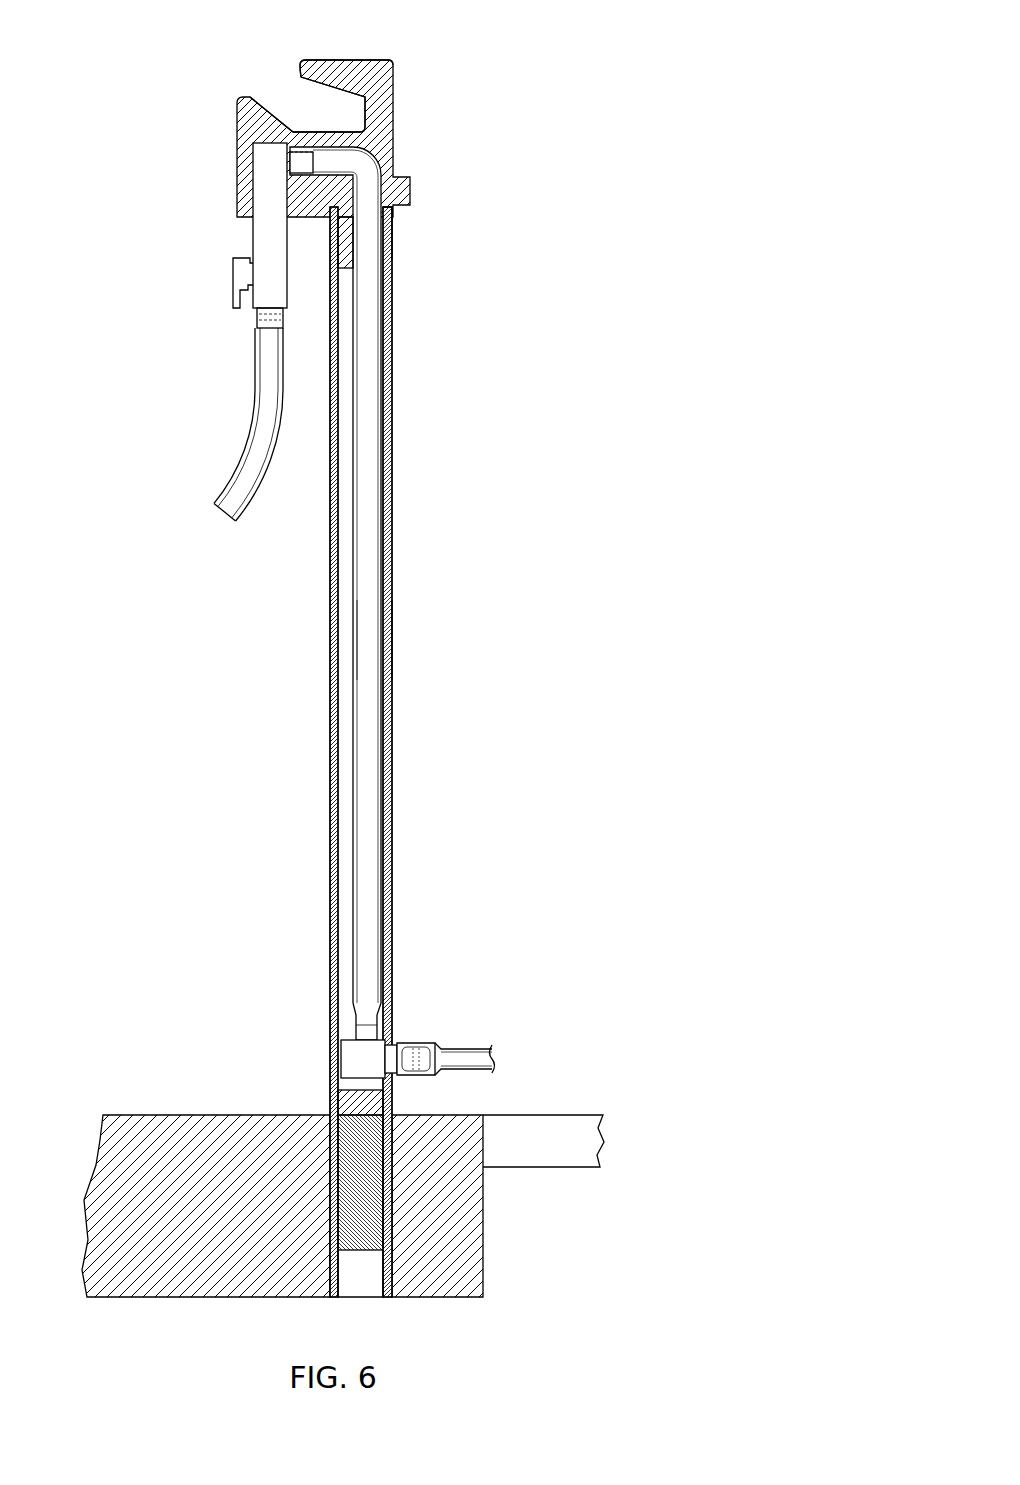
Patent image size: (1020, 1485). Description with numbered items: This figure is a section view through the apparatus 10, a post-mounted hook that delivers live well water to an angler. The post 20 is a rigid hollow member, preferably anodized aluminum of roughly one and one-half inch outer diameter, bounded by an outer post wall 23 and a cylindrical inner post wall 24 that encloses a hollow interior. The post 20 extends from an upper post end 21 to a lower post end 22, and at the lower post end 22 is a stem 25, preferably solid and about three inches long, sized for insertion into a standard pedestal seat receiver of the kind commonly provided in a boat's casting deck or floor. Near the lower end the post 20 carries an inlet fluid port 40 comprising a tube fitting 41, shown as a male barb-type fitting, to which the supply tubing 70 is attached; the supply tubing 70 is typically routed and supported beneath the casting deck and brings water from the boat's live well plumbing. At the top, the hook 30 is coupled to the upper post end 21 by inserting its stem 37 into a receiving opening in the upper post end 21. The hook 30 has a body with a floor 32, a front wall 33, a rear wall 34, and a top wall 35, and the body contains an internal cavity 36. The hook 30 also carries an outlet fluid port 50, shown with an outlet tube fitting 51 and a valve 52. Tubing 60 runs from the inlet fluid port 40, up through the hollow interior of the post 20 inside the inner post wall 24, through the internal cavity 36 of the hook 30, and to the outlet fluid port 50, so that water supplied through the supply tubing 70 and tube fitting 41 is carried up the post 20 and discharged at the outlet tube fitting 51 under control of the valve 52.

The apparatus 10 is at (570, 182).
The post 20 is at (393, 494).
The upper post end 21 is at (393, 248).
The lower post end 22 is at (392, 1102).
The outer post wall 23 is at (393, 643).
The inner post wall 24 is at (337, 643).
The stem 25 is at (367, 1205).
The hook 30 is at (457, 98).
The floor 32 is at (323, 131).
The front wall 33 is at (276, 120).
The rear wall 34 is at (353, 74).
The top wall 35 is at (300, 63).
The internal cavity 36 is at (253, 153).
The stem 37 is at (353, 268).
The inlet fluid port 40 is at (412, 1032).
The tube fitting 41 is at (425, 1058).
The outlet fluid port 50 is at (186, 222).
The outlet tube fitting 51 is at (255, 324).
The valve 52 is at (232, 288).
The tubing 60 is at (381, 853).
The supply tubing 70 is at (490, 1058).